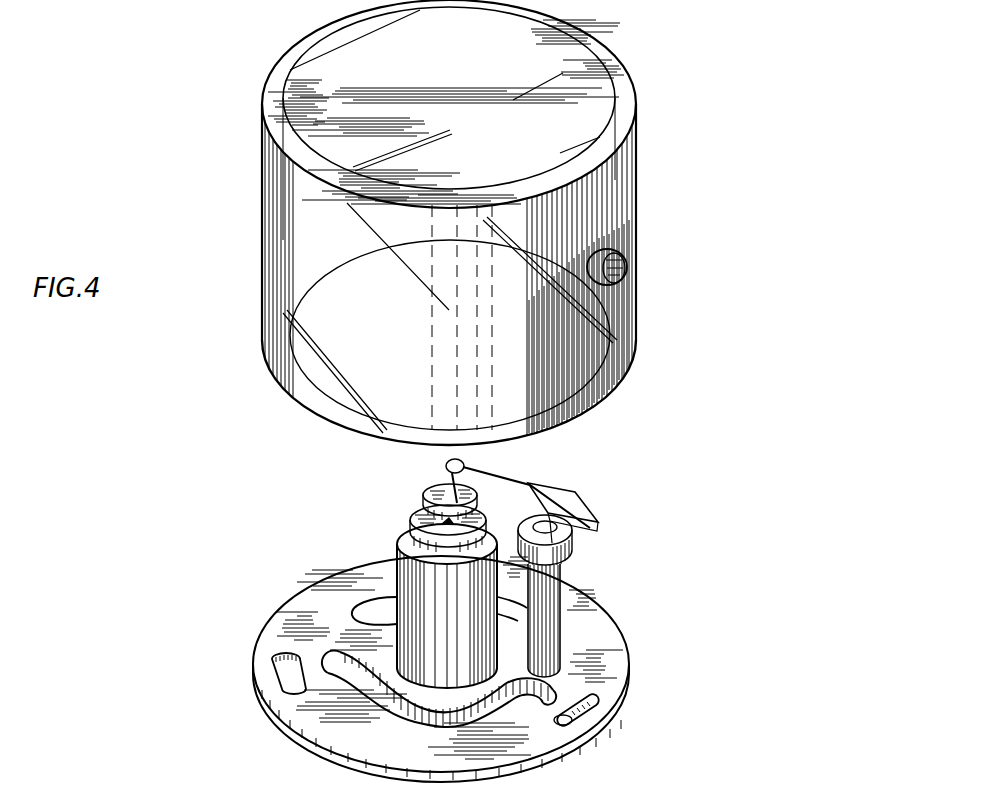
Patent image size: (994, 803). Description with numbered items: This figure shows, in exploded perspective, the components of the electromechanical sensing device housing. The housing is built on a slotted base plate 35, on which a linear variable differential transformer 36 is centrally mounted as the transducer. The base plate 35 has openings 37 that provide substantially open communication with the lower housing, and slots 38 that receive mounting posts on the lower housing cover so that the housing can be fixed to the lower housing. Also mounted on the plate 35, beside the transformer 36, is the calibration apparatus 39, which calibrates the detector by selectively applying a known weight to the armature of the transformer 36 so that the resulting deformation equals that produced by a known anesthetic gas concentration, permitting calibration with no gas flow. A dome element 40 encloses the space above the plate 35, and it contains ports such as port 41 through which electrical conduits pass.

The slotted base plate 35 is at (602, 653).
The linear variable differential transformer 36 is at (455, 620).
The openings 37 is at (343, 678).
The slots 38 is at (587, 722).
The calibration apparatus 39 is at (599, 582).
The dome element 40 is at (457, 47).
The port 41 is at (628, 268).